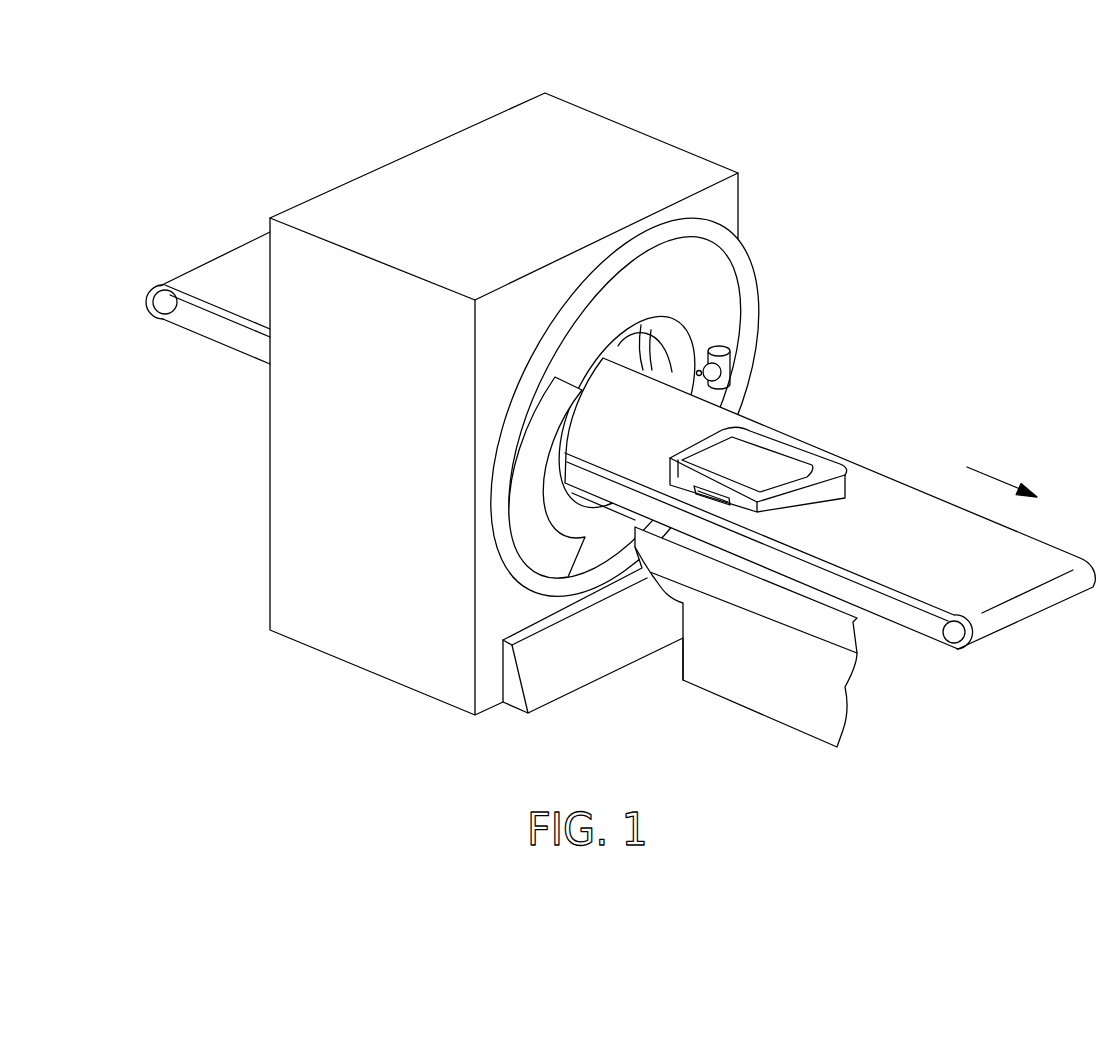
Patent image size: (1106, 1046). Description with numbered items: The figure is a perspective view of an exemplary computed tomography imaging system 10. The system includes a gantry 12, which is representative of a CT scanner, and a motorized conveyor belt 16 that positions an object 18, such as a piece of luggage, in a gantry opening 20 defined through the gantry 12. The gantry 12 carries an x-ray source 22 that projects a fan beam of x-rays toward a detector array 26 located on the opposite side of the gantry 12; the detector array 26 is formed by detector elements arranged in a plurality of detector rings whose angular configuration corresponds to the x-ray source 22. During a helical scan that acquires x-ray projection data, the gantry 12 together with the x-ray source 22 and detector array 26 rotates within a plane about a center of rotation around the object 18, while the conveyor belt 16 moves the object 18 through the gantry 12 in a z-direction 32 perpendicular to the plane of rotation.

The CT imaging system 10 is at (930, 318).
The gantry 12 is at (717, 284).
The motorized conveyor belt 16 is at (833, 600).
The object 18 is at (762, 465).
The gantry opening 20 is at (675, 323).
The x-ray source 22 is at (730, 357).
The detector array 26 is at (547, 497).
The z-direction 32 is at (992, 468).